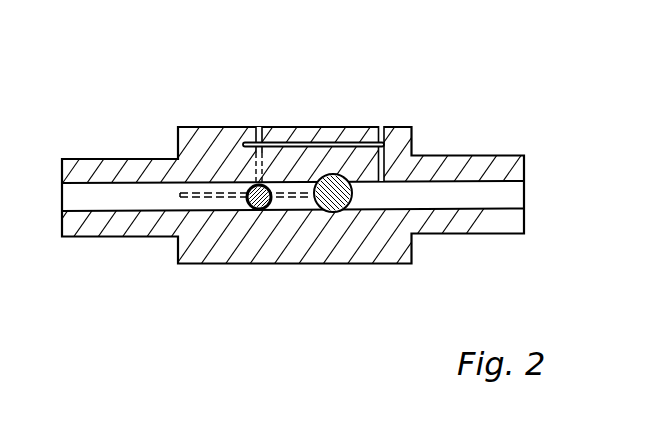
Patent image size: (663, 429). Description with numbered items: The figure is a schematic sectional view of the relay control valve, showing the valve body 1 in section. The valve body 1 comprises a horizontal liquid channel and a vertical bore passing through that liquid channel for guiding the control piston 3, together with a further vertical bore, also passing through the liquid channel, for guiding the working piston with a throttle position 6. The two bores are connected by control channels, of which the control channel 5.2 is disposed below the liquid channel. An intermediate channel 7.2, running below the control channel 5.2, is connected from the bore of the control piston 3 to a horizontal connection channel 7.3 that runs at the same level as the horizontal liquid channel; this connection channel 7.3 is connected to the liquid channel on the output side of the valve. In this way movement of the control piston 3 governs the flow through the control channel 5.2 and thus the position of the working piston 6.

The valve body 1 is at (290, 238).
The control piston 3 is at (253, 208).
The working piston with throttle position 6 is at (337, 210).
The control channel 5.2 is at (214, 194).
The intermediate channel 7.2 is at (262, 142).
The connection channel 7.3 is at (349, 143).